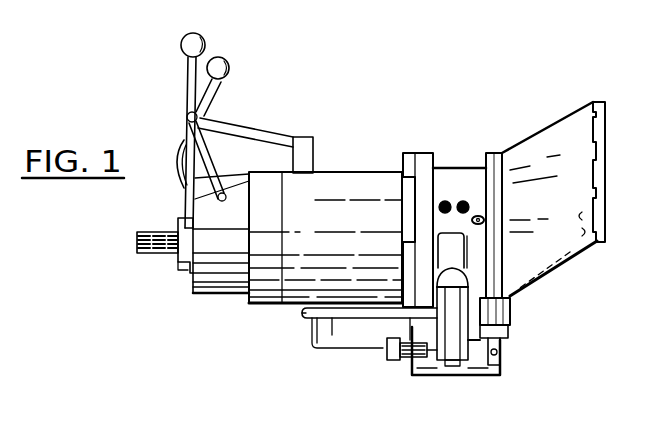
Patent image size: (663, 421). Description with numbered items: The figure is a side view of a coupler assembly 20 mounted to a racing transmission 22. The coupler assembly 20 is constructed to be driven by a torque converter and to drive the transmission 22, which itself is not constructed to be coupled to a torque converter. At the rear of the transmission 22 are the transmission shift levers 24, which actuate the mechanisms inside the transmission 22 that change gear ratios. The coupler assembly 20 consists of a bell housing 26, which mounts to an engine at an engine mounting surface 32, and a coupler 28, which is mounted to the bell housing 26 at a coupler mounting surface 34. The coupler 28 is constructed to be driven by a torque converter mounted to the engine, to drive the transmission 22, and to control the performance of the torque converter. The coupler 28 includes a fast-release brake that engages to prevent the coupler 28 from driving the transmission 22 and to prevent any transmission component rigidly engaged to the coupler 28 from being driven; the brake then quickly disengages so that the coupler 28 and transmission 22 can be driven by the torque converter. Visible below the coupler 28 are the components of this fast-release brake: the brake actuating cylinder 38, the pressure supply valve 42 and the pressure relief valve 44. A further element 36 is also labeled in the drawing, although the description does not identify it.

The coupler assembly 20 is at (480, 124).
The racing transmission 22 is at (337, 188).
The transmission shift levers 24 is at (206, 44).
The bell housing 26 is at (546, 152).
The coupler 28 is at (457, 166).
The engine mounting surface 32 is at (606, 142).
The coupler mounting surface 34 is at (500, 151).
The base 36 is at (209, 367).
The brake actuating cylinder 38 is at (452, 364).
The pressure supply valve 42 is at (405, 366).
The pressure relief valve 44 is at (508, 322).